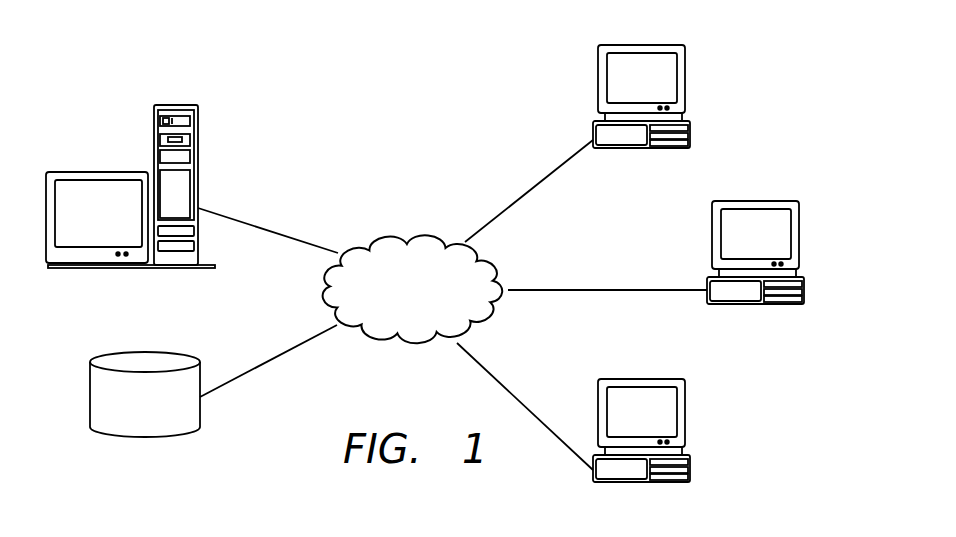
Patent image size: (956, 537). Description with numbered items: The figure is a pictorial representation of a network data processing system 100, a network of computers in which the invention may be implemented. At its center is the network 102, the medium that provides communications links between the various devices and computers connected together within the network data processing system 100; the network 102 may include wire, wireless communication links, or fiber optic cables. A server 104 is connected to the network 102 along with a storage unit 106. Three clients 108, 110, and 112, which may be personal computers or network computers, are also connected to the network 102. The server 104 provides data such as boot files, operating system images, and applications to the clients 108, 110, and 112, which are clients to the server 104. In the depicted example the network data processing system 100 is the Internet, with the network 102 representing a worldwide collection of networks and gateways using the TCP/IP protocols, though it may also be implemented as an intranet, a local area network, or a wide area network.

The network data processing system 100 is at (286, 87).
The network 102 is at (432, 319).
The server 104 is at (154, 127).
The storage unit 106 is at (90, 393).
The client 108 is at (687, 90).
The client 110 is at (800, 240).
The client 112 is at (688, 418).